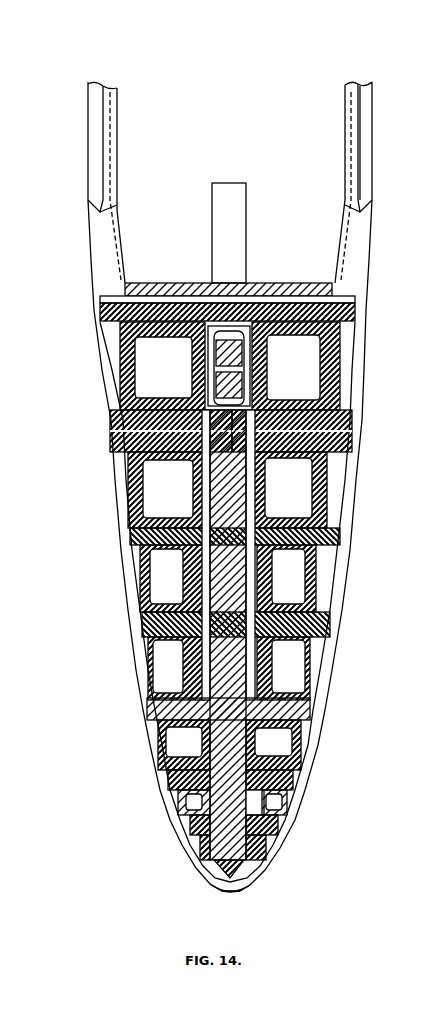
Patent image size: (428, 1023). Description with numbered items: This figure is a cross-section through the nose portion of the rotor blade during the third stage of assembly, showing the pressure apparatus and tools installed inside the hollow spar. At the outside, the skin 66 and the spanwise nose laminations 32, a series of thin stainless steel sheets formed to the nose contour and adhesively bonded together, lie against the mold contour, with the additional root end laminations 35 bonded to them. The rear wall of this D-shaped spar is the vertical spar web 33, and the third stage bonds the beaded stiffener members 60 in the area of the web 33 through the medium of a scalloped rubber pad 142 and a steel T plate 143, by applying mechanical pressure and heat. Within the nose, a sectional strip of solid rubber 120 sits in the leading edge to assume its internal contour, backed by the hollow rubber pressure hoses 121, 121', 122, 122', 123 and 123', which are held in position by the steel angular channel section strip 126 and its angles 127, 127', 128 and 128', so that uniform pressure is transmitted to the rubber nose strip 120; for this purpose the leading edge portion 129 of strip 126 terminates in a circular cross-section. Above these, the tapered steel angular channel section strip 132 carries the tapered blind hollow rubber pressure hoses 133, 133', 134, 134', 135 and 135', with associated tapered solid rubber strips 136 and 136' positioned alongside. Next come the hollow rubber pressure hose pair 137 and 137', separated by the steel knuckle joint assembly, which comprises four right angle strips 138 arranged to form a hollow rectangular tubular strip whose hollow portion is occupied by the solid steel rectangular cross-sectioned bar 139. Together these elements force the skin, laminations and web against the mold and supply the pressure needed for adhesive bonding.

The stainless steel sheets 32 is at (246, 884).
The vertical web 33 is at (340, 330).
The root end laminations 35 is at (124, 516).
The beaded stiffener members 60 is at (343, 133).
The skin 66 is at (372, 172).
The sectional strip of solid rubber 120 is at (212, 876).
The hollow rubber pressure hose 121 is at (329, 847).
The hollow rubber pressure hose 121' is at (162, 849).
The hollow rubber pressure hose 122 is at (337, 802).
The hollow rubber pressure hose 122' is at (152, 802).
The hollow rubber pressure hose 123 is at (329, 745).
The hollow rubber pressure hose 123' is at (145, 745).
The steel angular channel section strip 126 is at (262, 795).
The angle 127 is at (329, 826).
The angle 127' is at (156, 825).
The angle 128 is at (329, 776).
The angle 128' is at (149, 780).
The leading edge portion of channel strip 129 is at (248, 862).
The tapered steel angular channel section strip 132 is at (230, 570).
The blind hollow rubber pressure hose 133 is at (334, 668).
The blind hollow rubber pressure hose 133' is at (136, 668).
The blind hollow rubber pressure hose 134 is at (334, 578).
The blind hollow rubber pressure hose 134' is at (126, 578).
The blind hollow rubber pressure hose 135 is at (332, 490).
The blind hollow rubber pressure hose 135' is at (125, 490).
The tapered solid rubber strip 136 is at (322, 431).
The tapered solid rubber strip 136' is at (135, 431).
The hollow rubber pressure hose 137 is at (332, 366).
The hollow rubber pressure hose 137' is at (120, 366).
The right angle strips 138 is at (222, 380).
The solid steel rectangular cross-sectioned bar 139 is at (248, 360).
The scalloped rubber pad 142 is at (352, 313).
The steel T plate 143 is at (318, 292).